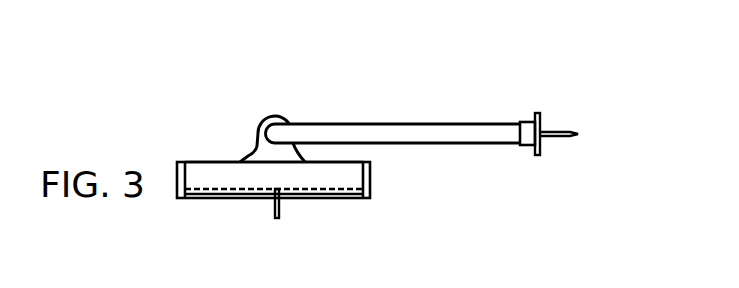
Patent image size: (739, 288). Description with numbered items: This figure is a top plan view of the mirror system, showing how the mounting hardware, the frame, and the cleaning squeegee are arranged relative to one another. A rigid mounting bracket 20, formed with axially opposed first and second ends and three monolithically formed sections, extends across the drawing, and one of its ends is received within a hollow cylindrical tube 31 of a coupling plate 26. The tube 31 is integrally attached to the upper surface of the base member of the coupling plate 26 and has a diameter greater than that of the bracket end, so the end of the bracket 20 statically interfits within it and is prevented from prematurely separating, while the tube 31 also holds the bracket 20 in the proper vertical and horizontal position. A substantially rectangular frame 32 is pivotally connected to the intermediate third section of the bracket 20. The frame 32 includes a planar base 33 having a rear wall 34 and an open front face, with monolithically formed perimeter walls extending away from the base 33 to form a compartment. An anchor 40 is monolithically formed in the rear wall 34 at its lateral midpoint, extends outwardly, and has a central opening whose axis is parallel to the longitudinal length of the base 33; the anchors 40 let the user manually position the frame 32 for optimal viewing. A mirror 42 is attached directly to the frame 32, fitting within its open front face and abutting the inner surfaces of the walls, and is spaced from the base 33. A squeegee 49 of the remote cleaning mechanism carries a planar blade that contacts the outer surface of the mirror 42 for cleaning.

The rigid mounting bracket 20 is at (393, 81).
The coupling plates 26 is at (578, 109).
The hollow cylindrical tube 31 is at (530, 120).
The frame 32 is at (331, 182).
The planar base 33 is at (161, 121).
The rear wall 34 is at (207, 160).
The anchors 40 is at (258, 152).
The mirror 42 is at (204, 200).
The squeegee 49 is at (341, 221).